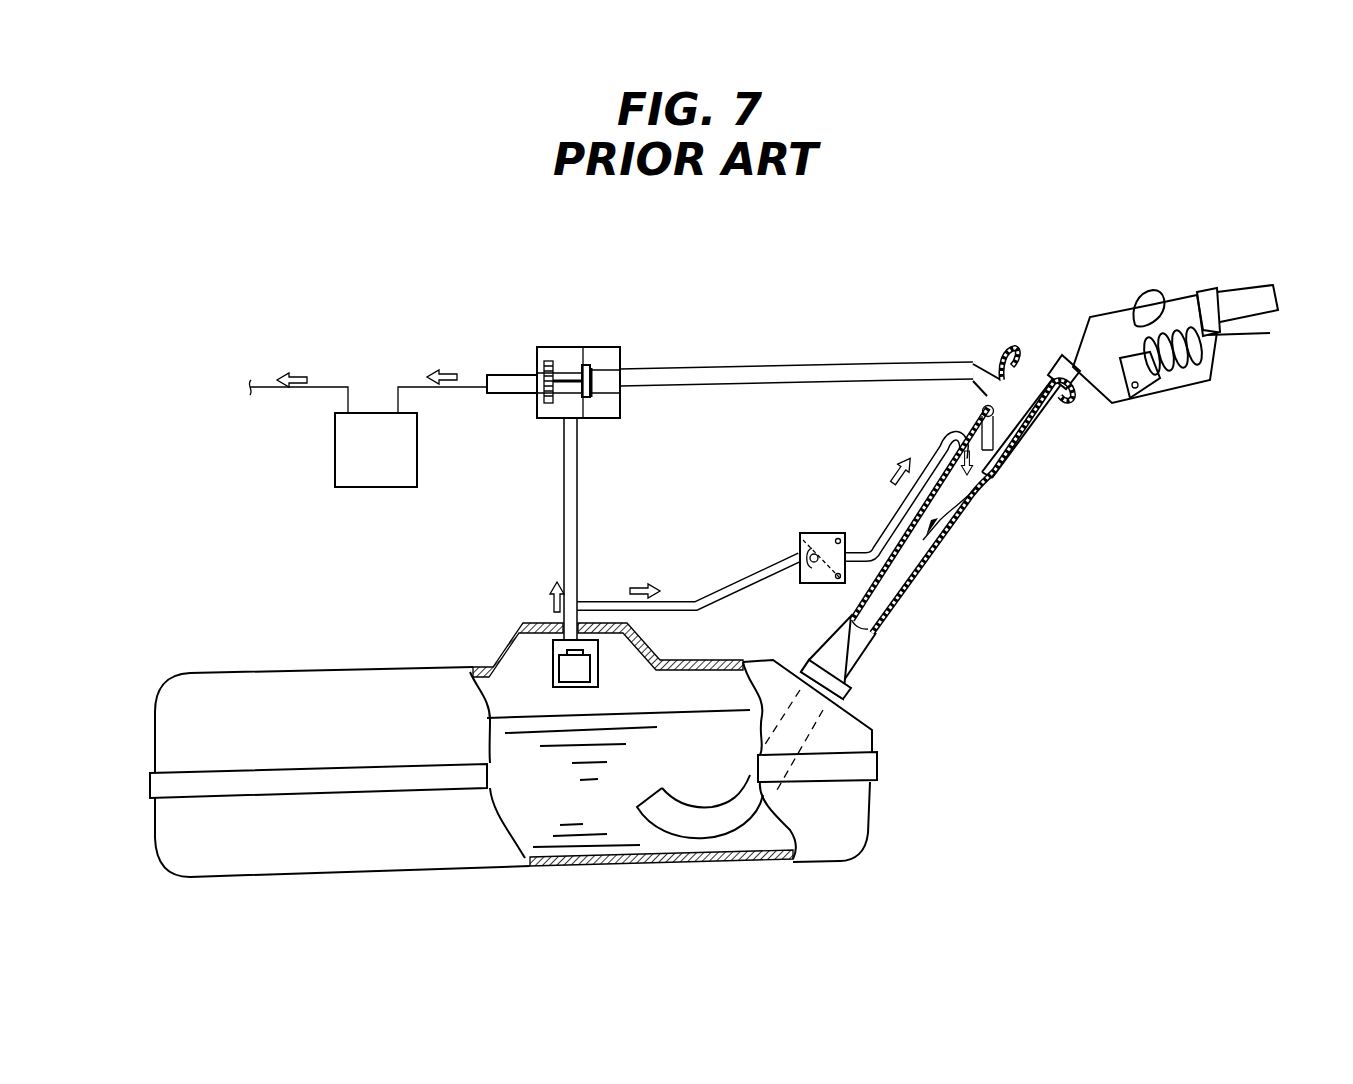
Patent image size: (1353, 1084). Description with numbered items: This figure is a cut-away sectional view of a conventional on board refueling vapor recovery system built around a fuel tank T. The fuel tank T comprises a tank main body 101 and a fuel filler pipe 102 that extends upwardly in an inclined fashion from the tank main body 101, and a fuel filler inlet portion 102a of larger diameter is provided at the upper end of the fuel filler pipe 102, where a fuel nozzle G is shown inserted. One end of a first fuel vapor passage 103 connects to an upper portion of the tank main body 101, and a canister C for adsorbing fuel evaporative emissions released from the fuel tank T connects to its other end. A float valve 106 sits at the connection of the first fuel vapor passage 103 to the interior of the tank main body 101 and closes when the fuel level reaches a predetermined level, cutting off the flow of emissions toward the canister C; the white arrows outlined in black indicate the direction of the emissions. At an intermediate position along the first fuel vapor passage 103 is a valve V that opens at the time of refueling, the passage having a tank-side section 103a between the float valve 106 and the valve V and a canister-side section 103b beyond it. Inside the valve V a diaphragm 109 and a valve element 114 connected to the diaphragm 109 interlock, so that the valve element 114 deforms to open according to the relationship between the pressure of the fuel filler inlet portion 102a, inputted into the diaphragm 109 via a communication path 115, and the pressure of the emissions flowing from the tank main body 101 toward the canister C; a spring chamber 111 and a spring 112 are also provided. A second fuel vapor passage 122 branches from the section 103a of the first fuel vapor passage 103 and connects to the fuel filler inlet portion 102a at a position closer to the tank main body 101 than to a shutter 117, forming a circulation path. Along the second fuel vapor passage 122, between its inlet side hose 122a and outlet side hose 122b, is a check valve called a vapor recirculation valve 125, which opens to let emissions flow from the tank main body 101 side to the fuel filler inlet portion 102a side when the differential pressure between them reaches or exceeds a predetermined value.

The tank main body 101 is at (873, 740).
The fuel filler pipe 102 is at (863, 655).
The fuel filler inlet portion 102a is at (1020, 447).
The first fuel vapor passage 103 is at (477, 455).
The first fuel vapor passage section 103a is at (562, 512).
The first fuel vapor passage section 103b is at (516, 396).
The float valve 106 is at (540, 644).
The diaphragm 109 is at (593, 360).
The spring chamber 111 is at (612, 405).
The spring 112 is at (580, 348).
The valve element 114 is at (558, 347).
The communication path 115 is at (772, 362).
The shutter 117 is at (975, 422).
The second fuel vapor passage 122 is at (876, 453).
The inlet side hose 122a is at (800, 545).
The outlet side hose 122b is at (850, 550).
The vapor recirculation valve 125 is at (823, 584).
The canister C is at (376, 407).
The valve V is at (612, 350).
The fuel nozzle G is at (1118, 293).
The fuel tank T is at (1015, 650).